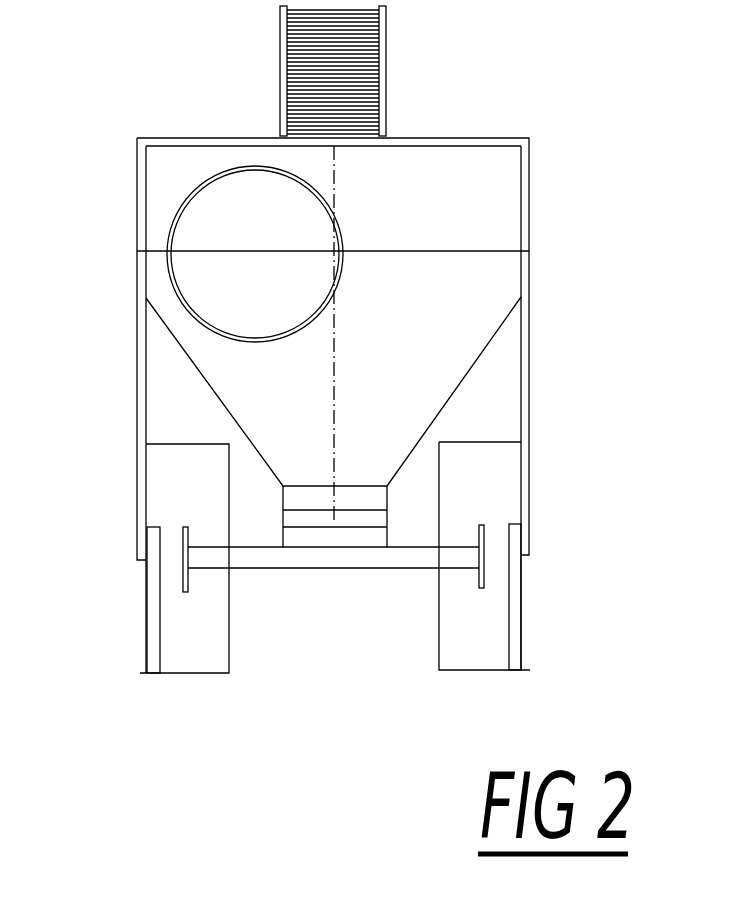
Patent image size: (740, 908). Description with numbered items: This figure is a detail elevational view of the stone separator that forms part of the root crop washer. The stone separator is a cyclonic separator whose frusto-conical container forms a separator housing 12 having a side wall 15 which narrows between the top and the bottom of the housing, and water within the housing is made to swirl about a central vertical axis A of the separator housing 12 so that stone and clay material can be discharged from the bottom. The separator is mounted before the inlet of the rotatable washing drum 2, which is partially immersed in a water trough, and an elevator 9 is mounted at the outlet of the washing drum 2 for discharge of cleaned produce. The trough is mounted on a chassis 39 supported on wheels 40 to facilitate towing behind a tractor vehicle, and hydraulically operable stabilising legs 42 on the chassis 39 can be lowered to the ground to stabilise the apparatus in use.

The washing drum 2 is at (345, 217).
The elevator 9 is at (387, 60).
The separator housing 12 is at (485, 355).
The side wall 15 is at (467, 308).
The chassis 39 is at (340, 587).
The wheels 40 is at (205, 660).
The stabilising legs 42 is at (152, 620).
The central vertical axis A is at (335, 380).